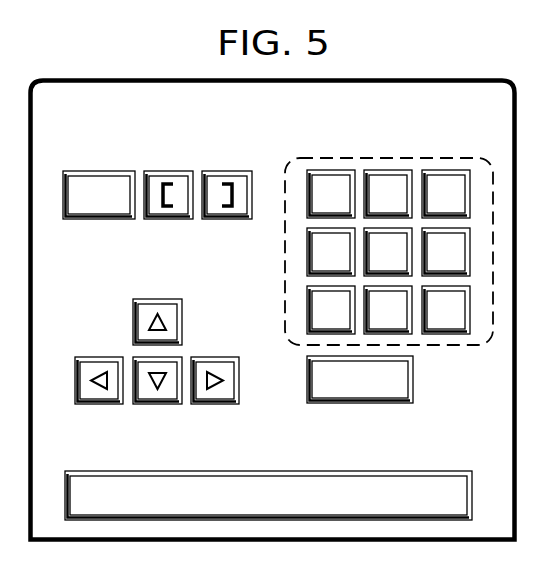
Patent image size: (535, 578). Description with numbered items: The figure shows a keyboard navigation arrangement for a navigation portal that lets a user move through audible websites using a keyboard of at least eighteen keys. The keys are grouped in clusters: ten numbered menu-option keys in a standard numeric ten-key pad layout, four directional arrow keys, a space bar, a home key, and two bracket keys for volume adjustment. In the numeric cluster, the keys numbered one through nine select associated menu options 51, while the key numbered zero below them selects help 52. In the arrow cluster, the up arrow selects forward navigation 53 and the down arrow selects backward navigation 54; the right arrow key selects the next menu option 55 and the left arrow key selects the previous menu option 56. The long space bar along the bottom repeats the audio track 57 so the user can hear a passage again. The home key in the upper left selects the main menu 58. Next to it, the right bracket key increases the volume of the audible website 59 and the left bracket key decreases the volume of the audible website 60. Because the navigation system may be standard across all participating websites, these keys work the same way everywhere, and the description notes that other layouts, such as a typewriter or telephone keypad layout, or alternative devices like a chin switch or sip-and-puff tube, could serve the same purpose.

The menu options 51 is at (430, 152).
The help 52 is at (413, 379).
The forward navigation 53 is at (133, 322).
The backward navigation 54 is at (158, 405).
The next menu option 55 is at (215, 405).
The previous menu option 56 is at (102, 405).
The audio track repeat 57 is at (267, 470).
The main menu 58 is at (100, 170).
The volume increase 59 is at (228, 170).
The volume decrease 60 is at (168, 170).